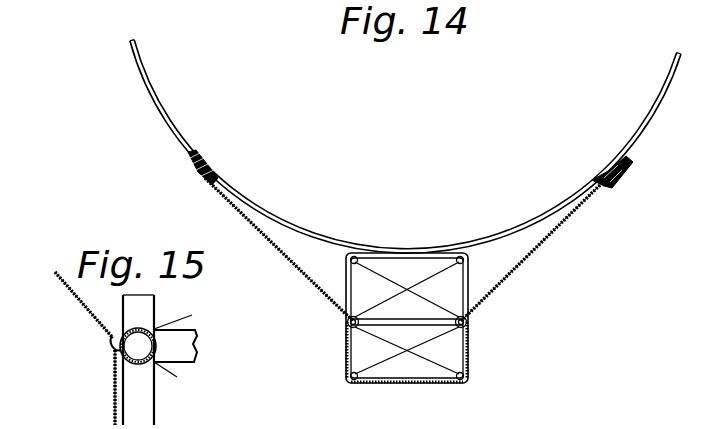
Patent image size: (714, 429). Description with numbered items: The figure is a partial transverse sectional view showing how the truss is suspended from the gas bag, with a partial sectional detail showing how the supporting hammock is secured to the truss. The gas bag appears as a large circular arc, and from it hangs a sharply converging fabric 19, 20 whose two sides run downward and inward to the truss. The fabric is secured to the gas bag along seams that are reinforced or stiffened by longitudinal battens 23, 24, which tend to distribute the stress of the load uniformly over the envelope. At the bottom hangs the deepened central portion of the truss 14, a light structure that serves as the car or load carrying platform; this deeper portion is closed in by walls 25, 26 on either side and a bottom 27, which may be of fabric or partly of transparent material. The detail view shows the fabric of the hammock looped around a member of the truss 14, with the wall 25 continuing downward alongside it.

In FIG. 14, the deepened central portion of the truss 14 is at (355, 358).
In FIG. 15, the deepened central portion of the truss 14 is at (192, 399).
In FIG. 14, the suspending fabric 19 is at (538, 248).
In FIG. 14, the suspending fabric 20 is at (292, 260).
In FIG. 15, the suspending fabric 20 is at (70, 289).
In FIG. 14, the longitudinal batten 23 is at (198, 178).
In FIG. 14, the longitudinal batten 24 is at (618, 182).
In FIG. 14, the wall 25 is at (346, 345).
In FIG. 15, the wall 25 is at (113, 394).
In FIG. 14, the wall 26 is at (470, 352).
In FIG. 14, the bottom 27 is at (420, 384).